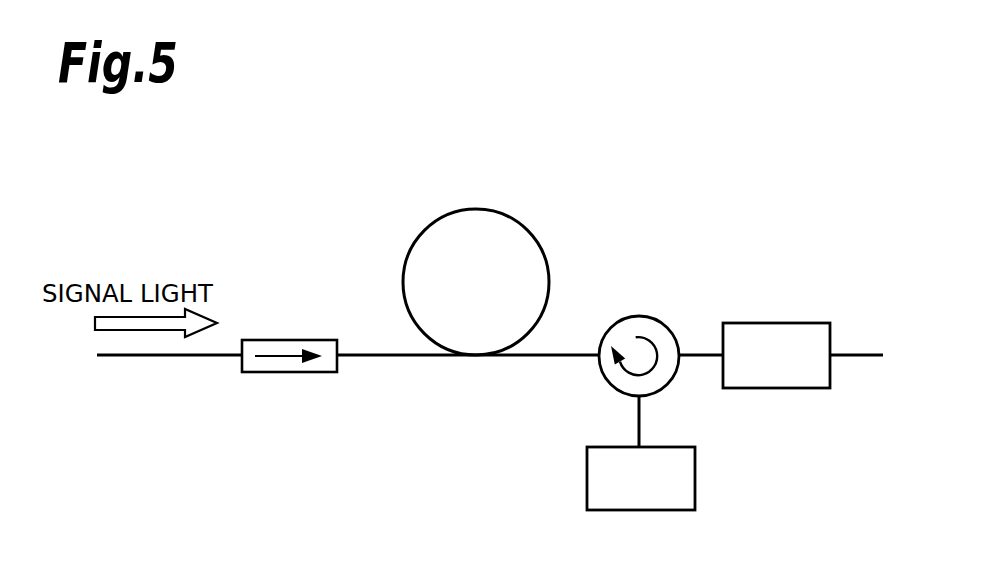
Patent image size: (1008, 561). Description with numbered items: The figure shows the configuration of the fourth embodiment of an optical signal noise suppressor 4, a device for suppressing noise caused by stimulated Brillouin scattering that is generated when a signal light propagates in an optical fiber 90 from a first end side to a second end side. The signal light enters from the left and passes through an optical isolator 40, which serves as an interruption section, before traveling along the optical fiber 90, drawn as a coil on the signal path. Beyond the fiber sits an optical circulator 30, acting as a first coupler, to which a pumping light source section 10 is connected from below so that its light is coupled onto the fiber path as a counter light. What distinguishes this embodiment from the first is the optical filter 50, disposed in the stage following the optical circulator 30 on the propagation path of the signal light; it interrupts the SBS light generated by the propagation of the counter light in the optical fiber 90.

The optical signal noise suppressor 4 is at (697, 104).
The pumping light source section 10 is at (695, 473).
The optical circulator 30 is at (643, 317).
The optical isolator 40 is at (292, 340).
The optical filter 50 is at (778, 323).
The optical fiber 90 is at (527, 223).